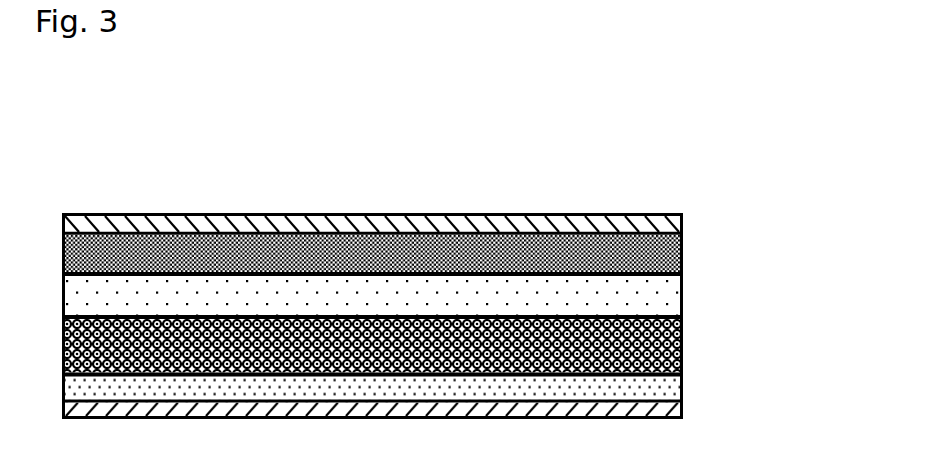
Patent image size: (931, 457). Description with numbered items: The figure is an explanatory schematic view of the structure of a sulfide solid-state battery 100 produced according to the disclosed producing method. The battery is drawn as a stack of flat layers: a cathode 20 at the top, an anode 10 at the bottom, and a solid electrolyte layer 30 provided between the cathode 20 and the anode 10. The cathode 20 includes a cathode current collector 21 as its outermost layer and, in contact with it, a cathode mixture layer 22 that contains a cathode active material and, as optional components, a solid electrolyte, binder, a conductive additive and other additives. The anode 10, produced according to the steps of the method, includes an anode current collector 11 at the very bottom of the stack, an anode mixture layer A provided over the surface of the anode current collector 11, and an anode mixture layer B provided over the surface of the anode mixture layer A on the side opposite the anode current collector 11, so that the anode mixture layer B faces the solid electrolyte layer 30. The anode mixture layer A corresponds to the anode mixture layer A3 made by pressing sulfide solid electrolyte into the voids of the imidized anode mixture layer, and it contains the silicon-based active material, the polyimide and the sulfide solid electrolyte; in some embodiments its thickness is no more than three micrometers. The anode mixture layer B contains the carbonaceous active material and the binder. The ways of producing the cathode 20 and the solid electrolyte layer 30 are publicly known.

The sulfide solid-state battery 100 is at (398, 156).
The cathode 20 is at (442, 242).
The cathode current collector 21 is at (683, 221).
The cathode mixture layer 22 is at (413, 254).
The solid electrolyte layer 30 is at (683, 294).
The anode 10 is at (463, 370).
The anode mixture layer B is at (683, 339).
The anode mixture layer A is at (430, 385).
The anode mixture layer A3 is at (683, 379).
The anode current collector 11 is at (683, 406).